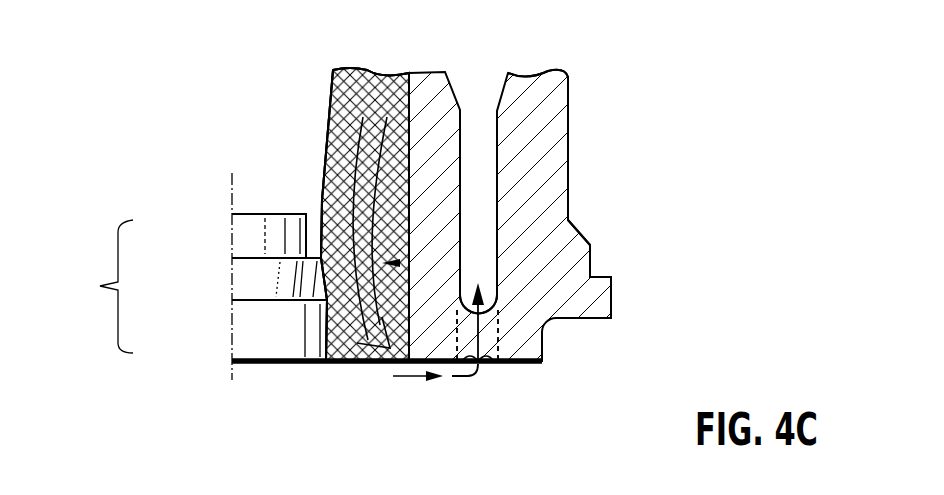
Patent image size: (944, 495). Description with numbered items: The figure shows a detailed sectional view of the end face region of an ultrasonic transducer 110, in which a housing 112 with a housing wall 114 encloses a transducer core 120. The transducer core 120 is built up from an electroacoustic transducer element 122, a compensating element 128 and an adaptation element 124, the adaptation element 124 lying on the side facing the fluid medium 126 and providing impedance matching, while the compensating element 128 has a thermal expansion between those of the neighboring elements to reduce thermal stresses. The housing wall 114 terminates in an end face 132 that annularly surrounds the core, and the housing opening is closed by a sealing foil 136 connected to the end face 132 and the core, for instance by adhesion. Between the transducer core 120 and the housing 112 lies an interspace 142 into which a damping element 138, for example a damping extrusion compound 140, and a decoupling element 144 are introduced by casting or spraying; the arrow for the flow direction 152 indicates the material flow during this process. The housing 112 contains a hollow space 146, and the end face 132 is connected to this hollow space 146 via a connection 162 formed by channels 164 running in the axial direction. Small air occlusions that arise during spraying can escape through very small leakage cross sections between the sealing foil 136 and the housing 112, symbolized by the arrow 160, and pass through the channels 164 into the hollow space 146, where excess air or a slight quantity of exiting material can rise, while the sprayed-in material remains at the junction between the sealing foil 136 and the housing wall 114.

The ultrasonic transducer 110 is at (180, 65).
The housing 112 is at (585, 107).
The housing wall 114 is at (550, 157).
The transducer core 120 is at (192, 283).
The electroacoustic transducer element 122 is at (247, 235).
The adaptation element 124 is at (247, 342).
The fluid medium 126 is at (292, 446).
The compensating element 128 is at (247, 283).
The end face 132 is at (508, 373).
The sealing foil 136 is at (345, 365).
The damping element 138 is at (340, 121).
The damping extrusion compound 140 is at (365, 214).
The interspace 142 is at (400, 263).
The decoupling element 144 is at (365, 214).
The hollow space 146 is at (477, 199).
The flow direction 152 is at (365, 158).
The arrow 160 is at (460, 380).
The connection 162 is at (497, 333).
The channels 164 is at (477, 335).